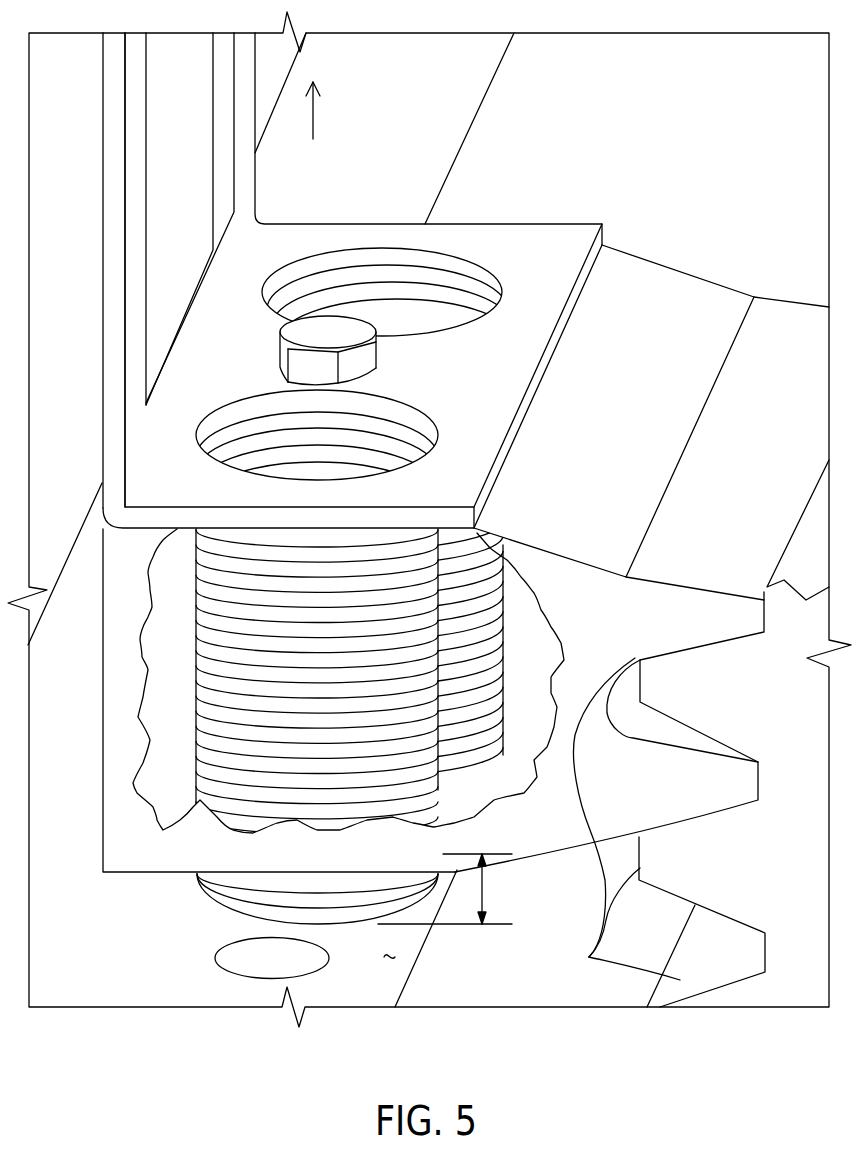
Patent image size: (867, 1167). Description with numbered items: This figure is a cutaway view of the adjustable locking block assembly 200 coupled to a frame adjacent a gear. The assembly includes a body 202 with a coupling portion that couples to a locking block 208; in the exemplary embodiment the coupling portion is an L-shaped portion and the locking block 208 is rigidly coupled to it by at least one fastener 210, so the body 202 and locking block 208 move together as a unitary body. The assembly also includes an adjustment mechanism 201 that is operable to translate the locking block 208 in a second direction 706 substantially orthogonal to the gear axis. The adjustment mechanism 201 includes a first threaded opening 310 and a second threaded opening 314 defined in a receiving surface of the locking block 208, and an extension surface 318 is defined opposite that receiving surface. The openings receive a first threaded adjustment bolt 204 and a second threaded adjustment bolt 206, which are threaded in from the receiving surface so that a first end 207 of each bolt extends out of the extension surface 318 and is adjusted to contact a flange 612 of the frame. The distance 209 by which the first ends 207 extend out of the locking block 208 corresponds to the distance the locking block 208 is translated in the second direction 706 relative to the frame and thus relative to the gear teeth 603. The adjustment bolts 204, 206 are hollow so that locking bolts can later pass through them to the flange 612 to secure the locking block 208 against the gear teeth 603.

The adjustable locking block assembly 200 is at (361, 546).
The adjustment mechanism 201 is at (361, 622).
The body 202 is at (312, 232).
The first threaded adjustment bolt 204 is at (484, 638).
The second threaded adjustment bolt 206 is at (229, 890).
The first end 207 is at (354, 928).
The locking block 208 is at (665, 280).
The distance 209 is at (484, 889).
The fastener 210 is at (378, 346).
The first threaded opening 310 is at (462, 262).
The second threaded opening 314 is at (375, 448).
The extension surface 318 is at (128, 882).
The gear teeth 603 is at (642, 733).
The flange 612 is at (395, 957).
The second direction 706 is at (315, 126).